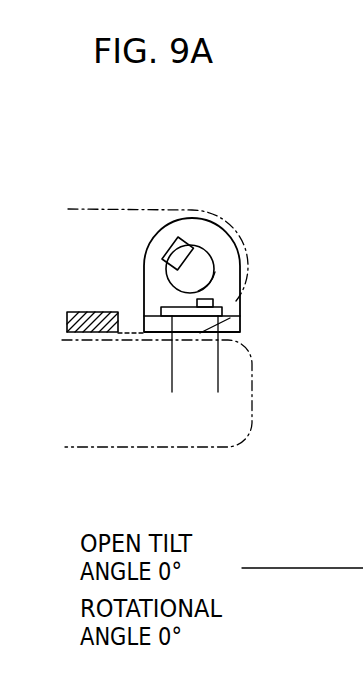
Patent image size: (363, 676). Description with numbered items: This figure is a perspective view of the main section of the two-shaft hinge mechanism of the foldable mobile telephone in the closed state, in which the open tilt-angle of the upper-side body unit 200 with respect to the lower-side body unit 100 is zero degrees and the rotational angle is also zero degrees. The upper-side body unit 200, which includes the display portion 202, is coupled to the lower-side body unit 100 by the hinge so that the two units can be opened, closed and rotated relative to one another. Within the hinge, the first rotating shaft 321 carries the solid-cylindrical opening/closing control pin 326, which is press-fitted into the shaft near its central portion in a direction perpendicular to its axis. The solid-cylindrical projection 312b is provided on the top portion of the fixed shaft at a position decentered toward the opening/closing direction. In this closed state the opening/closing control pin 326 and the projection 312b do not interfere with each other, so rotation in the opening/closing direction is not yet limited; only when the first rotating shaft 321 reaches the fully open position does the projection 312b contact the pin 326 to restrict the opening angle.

The lower-side body unit 100 is at (228, 427).
The upper-side body unit 200 is at (145, 222).
The display portion 202 is at (99, 311).
The first rotating shaft 321 is at (212, 251).
The opening/closing control pin 326 is at (178, 242).
The projection 312b is at (214, 300).